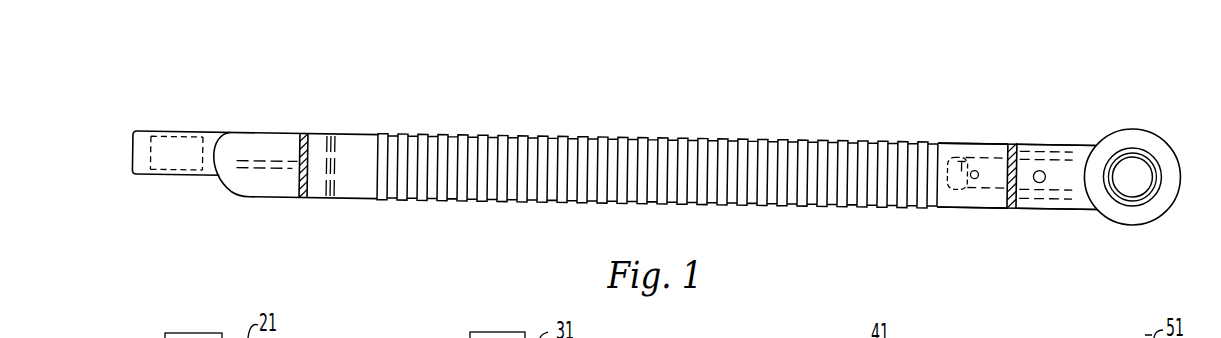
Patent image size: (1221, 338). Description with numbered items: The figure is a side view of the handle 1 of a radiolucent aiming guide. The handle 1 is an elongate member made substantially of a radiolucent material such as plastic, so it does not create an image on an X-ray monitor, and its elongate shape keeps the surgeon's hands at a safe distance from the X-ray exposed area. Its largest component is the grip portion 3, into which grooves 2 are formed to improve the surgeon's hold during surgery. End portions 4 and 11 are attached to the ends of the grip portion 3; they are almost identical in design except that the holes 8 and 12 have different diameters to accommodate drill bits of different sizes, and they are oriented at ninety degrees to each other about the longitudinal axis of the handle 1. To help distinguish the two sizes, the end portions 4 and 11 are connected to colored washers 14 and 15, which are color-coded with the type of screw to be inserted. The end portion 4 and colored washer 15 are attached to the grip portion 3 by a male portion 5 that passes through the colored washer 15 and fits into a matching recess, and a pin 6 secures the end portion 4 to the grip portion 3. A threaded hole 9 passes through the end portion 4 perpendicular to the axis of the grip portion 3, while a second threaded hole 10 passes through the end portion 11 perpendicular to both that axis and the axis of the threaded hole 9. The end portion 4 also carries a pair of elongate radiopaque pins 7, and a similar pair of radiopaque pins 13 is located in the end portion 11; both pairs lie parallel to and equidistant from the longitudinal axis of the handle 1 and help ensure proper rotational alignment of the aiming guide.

The handle 1 is at (632, 103).
The grooves 2 is at (524, 199).
The grip portion 3 is at (934, 128).
The end portion 4 is at (1052, 128).
The male portion 5 is at (989, 168).
The pin 6 is at (959, 178).
The elongate pins 7 is at (1072, 134).
The hole 8 is at (1049, 168).
The threaded hole 9 is at (1155, 147).
The second threaded hole 10 is at (168, 130).
The end portion 11 is at (217, 128).
The hole 12 is at (338, 130).
The radiopaque pins 13 is at (277, 167).
The colored washer 14 is at (299, 198).
The colored washer 15 is at (1007, 129).